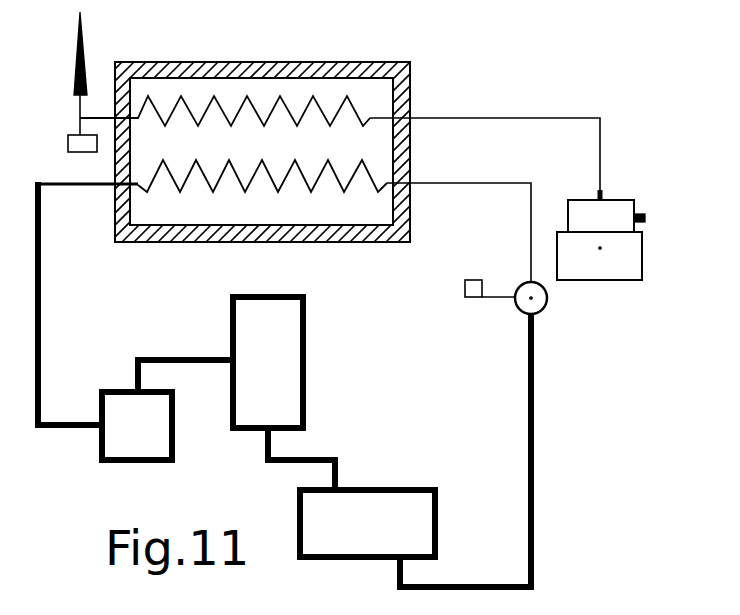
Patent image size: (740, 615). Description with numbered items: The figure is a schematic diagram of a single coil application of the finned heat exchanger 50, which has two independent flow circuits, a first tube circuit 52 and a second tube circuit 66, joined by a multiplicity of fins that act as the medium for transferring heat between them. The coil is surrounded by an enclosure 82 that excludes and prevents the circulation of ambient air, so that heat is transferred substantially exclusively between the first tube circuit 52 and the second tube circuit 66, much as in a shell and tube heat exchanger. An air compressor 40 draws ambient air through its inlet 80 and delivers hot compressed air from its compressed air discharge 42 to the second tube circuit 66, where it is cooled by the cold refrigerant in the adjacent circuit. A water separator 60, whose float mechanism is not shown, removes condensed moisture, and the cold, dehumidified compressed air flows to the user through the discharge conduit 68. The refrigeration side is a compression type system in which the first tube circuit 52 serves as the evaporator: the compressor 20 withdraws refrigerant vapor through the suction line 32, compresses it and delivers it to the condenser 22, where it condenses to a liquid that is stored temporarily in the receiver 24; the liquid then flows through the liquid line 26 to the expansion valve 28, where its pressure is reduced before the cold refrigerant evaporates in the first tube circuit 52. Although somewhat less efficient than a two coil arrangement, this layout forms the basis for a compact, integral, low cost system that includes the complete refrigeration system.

The compressor 20 is at (117, 392).
The condenser 22 is at (233, 332).
The receiver 24 is at (372, 490).
The liquid line 26 is at (531, 403).
The expansion valve 28 is at (517, 308).
The suction line 32 is at (30, 312).
The air compressor 40 is at (612, 213).
The compressed air discharge 42 is at (512, 120).
The heat exchanger 50 is at (289, 152).
The first tube circuit 52 is at (287, 177).
The water separator 60 is at (68, 152).
The second tube circuit 66 is at (325, 108).
The discharge conduit 68 is at (83, 58).
The inlet 80 is at (645, 218).
The enclosure 82 is at (410, 135).